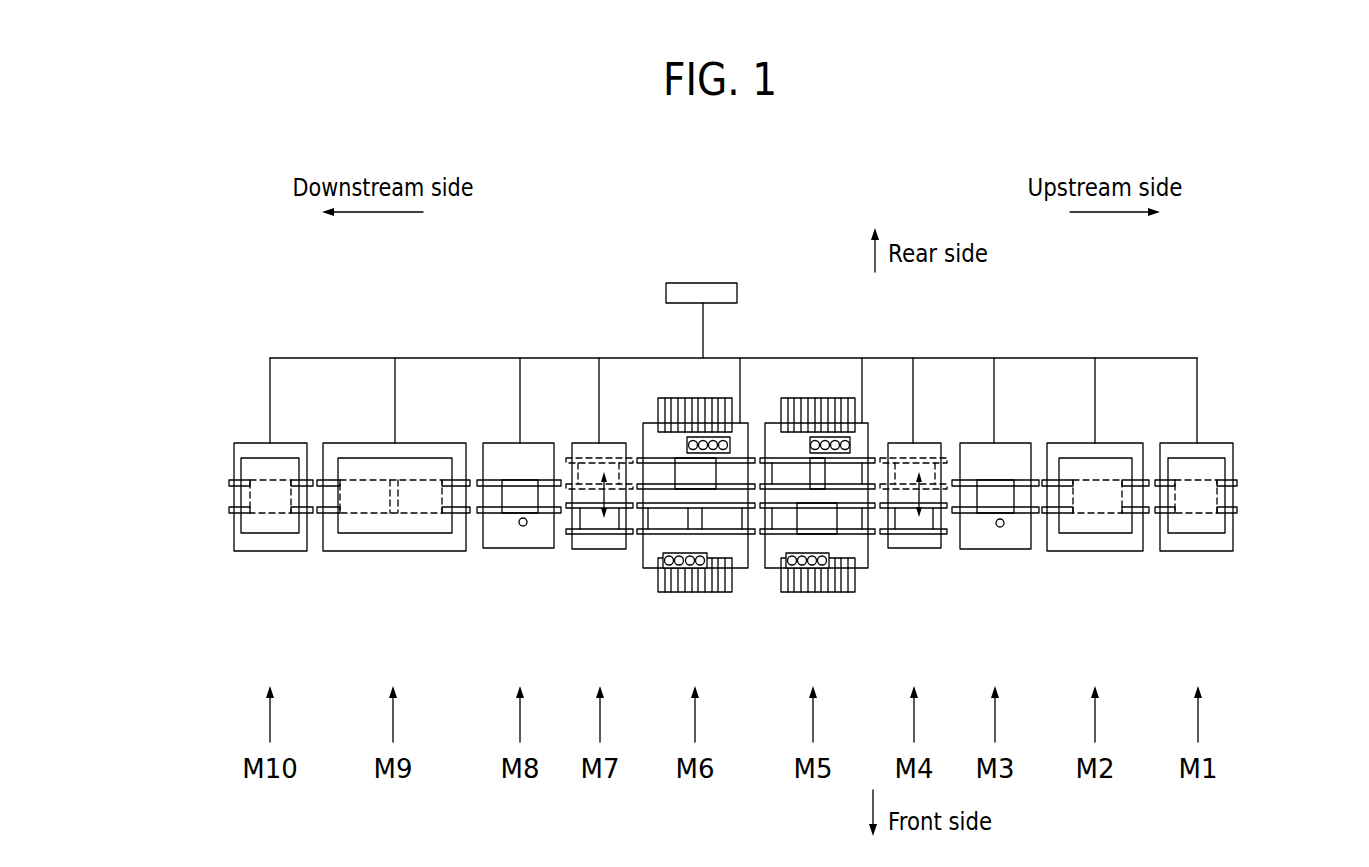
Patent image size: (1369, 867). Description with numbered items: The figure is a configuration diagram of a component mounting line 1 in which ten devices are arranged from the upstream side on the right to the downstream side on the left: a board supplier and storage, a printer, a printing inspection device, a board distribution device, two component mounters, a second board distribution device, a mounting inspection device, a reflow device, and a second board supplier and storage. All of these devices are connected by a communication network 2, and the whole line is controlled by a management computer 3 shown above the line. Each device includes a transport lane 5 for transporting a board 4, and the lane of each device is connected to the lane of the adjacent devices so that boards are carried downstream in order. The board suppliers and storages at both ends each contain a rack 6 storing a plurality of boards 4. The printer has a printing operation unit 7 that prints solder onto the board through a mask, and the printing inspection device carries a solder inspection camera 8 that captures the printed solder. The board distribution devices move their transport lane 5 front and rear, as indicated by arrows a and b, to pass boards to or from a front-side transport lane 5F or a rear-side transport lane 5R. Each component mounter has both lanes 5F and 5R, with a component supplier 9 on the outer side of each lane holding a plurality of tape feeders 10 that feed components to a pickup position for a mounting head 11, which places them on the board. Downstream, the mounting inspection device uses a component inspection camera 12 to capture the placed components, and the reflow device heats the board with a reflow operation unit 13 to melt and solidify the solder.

The component mounting line 1 is at (750, 183).
The communication network 2 is at (887, 358).
The management computer 3 is at (716, 283).
The board 4 is at (275, 480).
The transport lane 5 is at (229, 508).
The transport lane on the rear side 5R is at (871, 490).
The transport lane on the front side 5F is at (875, 507).
The rack 6 is at (275, 535).
The printing operation unit 7 is at (1097, 535).
The solder inspection camera 8 is at (1002, 527).
The component supplier 9 is at (833, 386).
The tape feeder 10 is at (796, 400).
The mounting head 11 is at (822, 445).
The component inspection camera 12 is at (521, 526).
The reflow operation unit 13 is at (397, 535).
The arrow a is at (921, 492).
The arrow b is at (603, 495).